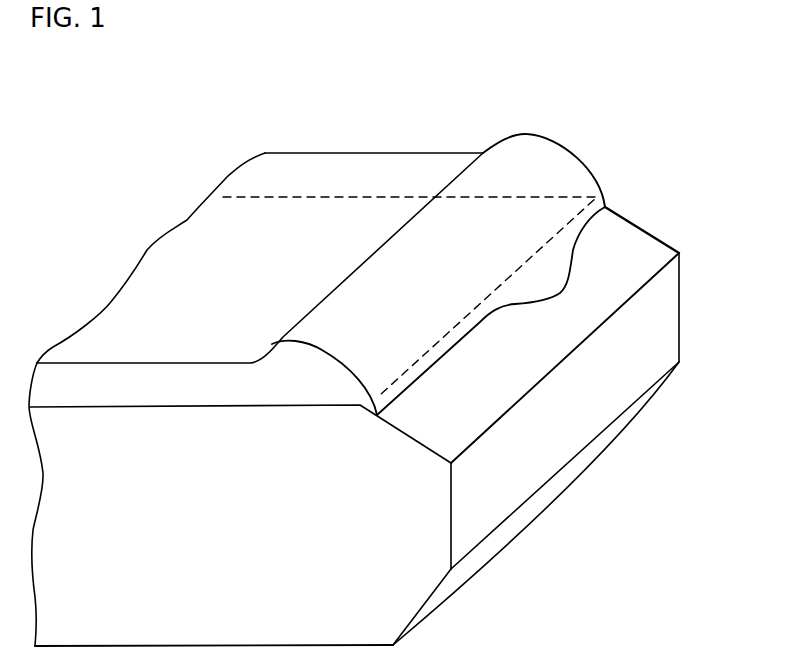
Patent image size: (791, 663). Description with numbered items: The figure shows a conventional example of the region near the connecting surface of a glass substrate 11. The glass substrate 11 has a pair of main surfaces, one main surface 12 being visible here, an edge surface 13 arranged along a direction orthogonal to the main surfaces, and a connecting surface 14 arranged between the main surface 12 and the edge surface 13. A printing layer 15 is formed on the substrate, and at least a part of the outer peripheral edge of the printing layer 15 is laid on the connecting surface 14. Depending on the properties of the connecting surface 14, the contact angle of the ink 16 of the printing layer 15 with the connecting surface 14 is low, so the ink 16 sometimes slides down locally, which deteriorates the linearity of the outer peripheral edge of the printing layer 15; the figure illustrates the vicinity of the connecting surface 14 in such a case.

The glass substrate 11 is at (666, 116).
The main surface 12 is at (340, 217).
The edge surface 13 is at (565, 420).
The connecting surface 14 is at (618, 245).
The printing layer 15 is at (553, 170).
The ink 16 is at (543, 287).